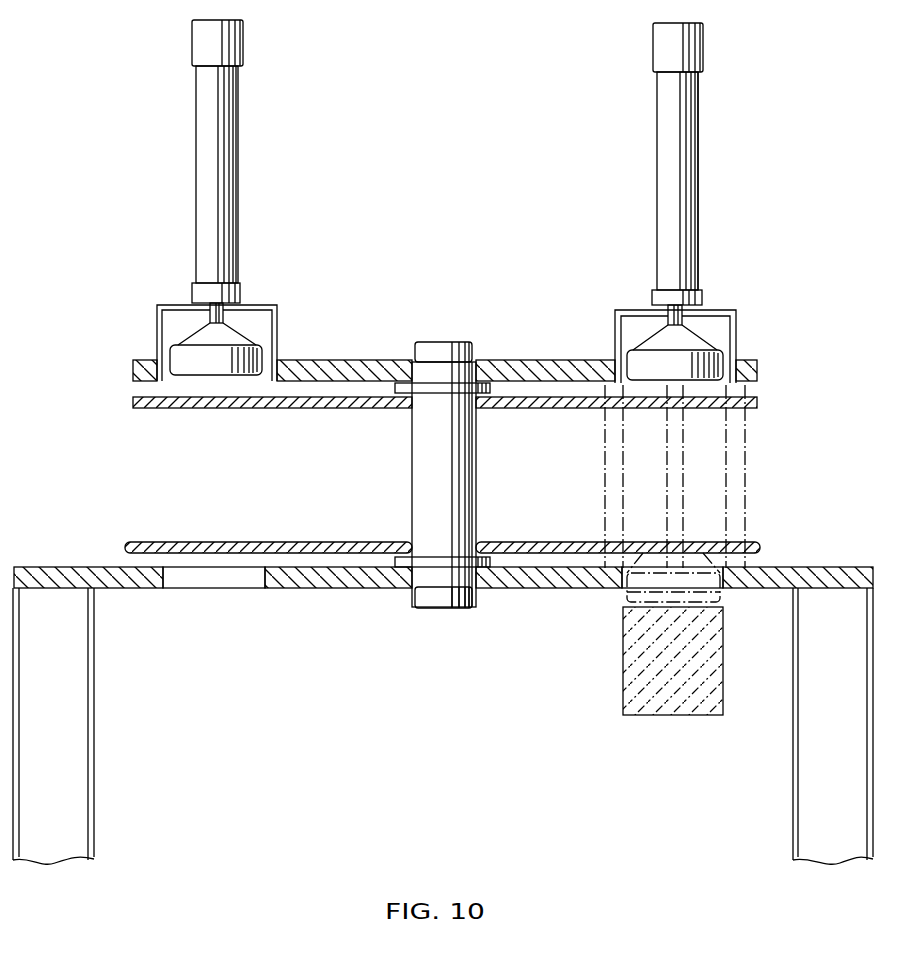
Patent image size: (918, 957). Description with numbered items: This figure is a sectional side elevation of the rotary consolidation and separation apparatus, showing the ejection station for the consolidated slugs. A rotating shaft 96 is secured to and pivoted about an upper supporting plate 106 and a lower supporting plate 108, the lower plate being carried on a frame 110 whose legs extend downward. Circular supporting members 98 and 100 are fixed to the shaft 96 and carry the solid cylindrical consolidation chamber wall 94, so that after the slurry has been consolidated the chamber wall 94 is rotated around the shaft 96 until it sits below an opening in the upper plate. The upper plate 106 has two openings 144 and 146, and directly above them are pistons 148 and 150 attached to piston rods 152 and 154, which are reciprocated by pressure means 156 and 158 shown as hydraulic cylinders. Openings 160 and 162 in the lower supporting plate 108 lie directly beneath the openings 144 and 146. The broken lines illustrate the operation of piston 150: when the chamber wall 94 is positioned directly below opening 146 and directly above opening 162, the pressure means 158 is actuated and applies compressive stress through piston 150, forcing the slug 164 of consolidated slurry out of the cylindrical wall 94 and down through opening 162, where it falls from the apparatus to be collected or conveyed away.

The cylindrical consolidation chamber wall 94 is at (748, 489).
The rotating shaft 96 is at (448, 457).
The circular supporting member 98 is at (295, 403).
The circular supporting member 100 is at (331, 541).
The supporting plate 106 is at (508, 360).
The supporting plate 108 is at (311, 589).
The frame 110 is at (94, 776).
The opening in plate 144 is at (268, 373).
The opening in plate 146 is at (623, 378).
The piston 148 is at (183, 350).
The piston 150 is at (703, 346).
The piston rod 152 is at (224, 320).
The piston rod 154 is at (670, 323).
The pressure means 156 is at (235, 191).
The pressure means 158 is at (656, 193).
The opening in supporting plate 160 is at (173, 580).
The opening in supporting plate 162 is at (620, 575).
The slug of consolidated slurry 164 is at (623, 670).